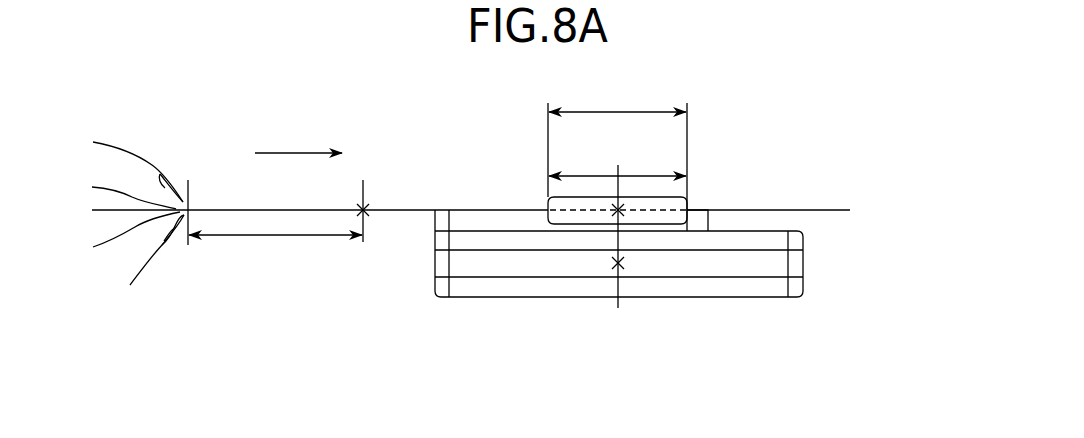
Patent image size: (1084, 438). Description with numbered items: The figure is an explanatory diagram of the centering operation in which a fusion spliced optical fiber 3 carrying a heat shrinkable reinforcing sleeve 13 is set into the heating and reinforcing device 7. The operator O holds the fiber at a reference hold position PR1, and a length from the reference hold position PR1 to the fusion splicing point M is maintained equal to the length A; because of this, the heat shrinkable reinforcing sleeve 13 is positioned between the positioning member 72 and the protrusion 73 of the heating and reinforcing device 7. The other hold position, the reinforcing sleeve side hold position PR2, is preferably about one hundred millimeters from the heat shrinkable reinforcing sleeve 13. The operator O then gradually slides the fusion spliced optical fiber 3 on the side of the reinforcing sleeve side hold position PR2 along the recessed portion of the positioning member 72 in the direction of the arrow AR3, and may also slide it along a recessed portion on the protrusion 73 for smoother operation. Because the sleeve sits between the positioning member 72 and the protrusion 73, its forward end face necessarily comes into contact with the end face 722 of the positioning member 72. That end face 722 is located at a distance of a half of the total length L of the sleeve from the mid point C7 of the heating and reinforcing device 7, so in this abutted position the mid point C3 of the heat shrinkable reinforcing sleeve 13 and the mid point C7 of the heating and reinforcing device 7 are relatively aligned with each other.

The operator O is at (140, 153).
The reference hold position PR1 is at (182, 254).
The arrow AR3 is at (290, 151).
The length A is at (275, 253).
The fusion splicing point M is at (368, 206).
The heating and reinforcing device 7 is at (813, 252).
The protrusion 73 is at (442, 218).
The heat shrinkable reinforcing sleeve 13 is at (547, 200).
The length L is at (617, 195).
The positioning member 72 is at (694, 204).
The fusion spliced optical fiber 3 is at (760, 209).
The reinforcing sleeve side hold position PR2 is at (829, 203).
The mid point of the heating and reinforcing device C7 is at (614, 266).
The mid point of the heat shrinkable reinforcing sleeve C3 is at (622, 212).
The end face of the positioning member 722 is at (683, 229).